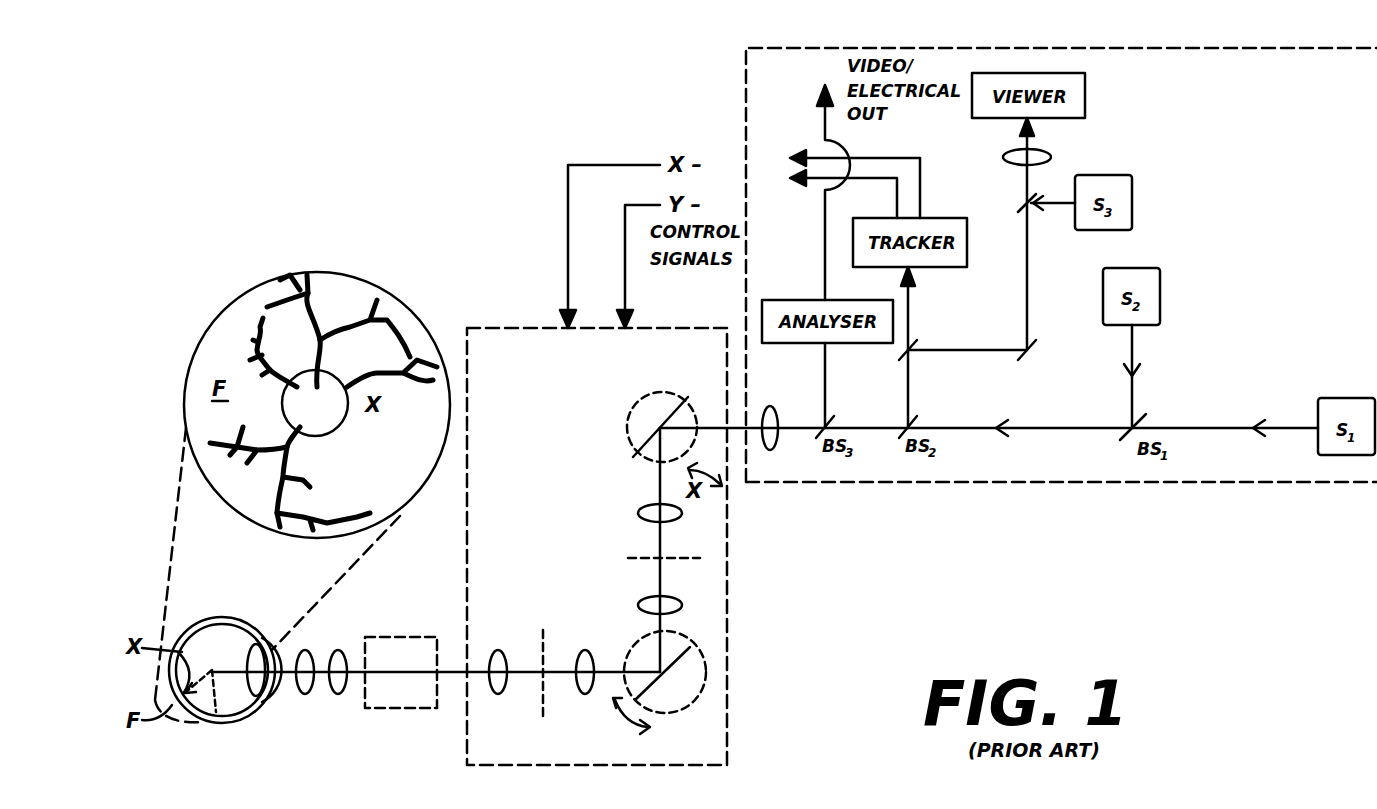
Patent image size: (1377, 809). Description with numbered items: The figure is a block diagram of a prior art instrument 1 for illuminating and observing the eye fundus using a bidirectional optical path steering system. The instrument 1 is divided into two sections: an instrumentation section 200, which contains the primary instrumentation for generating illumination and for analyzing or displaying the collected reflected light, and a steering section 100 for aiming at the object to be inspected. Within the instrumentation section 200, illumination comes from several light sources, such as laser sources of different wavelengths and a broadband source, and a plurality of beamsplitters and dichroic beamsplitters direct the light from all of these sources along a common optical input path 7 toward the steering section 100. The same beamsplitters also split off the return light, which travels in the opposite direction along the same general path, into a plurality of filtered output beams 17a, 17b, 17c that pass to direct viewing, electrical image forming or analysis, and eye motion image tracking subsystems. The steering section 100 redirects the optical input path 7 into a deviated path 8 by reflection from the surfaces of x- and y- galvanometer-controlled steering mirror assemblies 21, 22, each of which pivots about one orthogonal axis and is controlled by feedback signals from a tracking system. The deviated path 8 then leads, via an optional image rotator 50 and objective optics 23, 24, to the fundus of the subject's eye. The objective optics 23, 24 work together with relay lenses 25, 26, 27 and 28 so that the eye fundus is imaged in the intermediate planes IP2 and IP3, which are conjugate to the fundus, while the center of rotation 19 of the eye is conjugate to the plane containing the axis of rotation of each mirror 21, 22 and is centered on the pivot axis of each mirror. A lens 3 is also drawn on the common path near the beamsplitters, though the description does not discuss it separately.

The instrument 1 is at (847, 516).
The lens 3 is at (802, 426).
The common optical input path 7 is at (1068, 427).
The deviated path 8 is at (452, 672).
The filtered output beam 17a is at (825, 393).
The filtered output beam 17b is at (908, 393).
The filtered output beam 17c is at (1028, 262).
The center of rotation of the eye 19 is at (213, 672).
The steering mirror assembly 21 is at (630, 440).
The steering mirror assembly 22 is at (652, 700).
The objective optics 23 is at (300, 695).
The objective optics 24 is at (342, 695).
The relay lens 25 is at (495, 650).
The relay lens 26 is at (582, 650).
The relay lens 27 is at (643, 602).
The relay lens 28 is at (643, 509).
The image rotator 50 is at (405, 637).
The steering section 100 is at (540, 497).
The instrumentation section 200 is at (1282, 233).
The intermediate plane IP2 is at (543, 632).
The intermediate plane IP3 is at (628, 558).